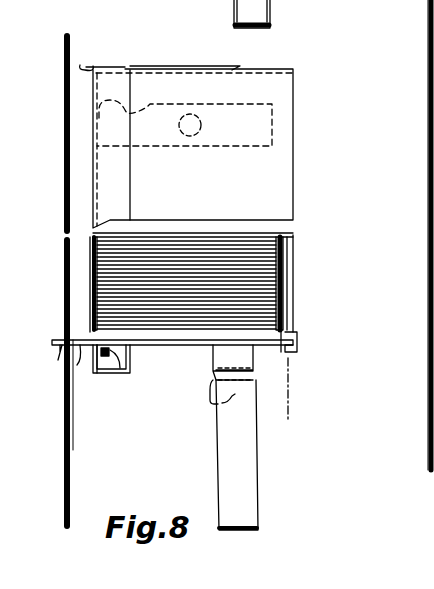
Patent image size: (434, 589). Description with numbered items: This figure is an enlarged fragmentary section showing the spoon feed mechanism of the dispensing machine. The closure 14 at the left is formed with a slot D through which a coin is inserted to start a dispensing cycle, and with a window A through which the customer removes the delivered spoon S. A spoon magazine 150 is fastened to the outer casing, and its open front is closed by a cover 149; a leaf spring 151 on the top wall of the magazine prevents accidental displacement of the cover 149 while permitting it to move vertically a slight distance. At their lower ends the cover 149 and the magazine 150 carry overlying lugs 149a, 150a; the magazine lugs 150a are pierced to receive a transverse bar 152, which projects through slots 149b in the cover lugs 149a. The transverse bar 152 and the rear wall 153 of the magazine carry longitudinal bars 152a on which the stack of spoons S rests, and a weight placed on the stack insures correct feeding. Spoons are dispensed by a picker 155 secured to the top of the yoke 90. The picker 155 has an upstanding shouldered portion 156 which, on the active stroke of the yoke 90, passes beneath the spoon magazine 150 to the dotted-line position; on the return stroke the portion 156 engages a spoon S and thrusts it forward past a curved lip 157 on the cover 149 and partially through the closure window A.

The closure 14 is at (71, 40).
The slot D is at (428, 25).
The spoon S is at (55, 340).
The window A is at (60, 350).
The yoke 90 is at (246, 464).
The cover 149 is at (118, 68).
The cover lugs 149a is at (132, 356).
The slots 149b is at (118, 375).
The spoon magazine 150 is at (294, 152).
The magazine lugs 150a is at (96, 374).
The leaf spring 151 is at (140, 66).
The transverse bar 152 is at (127, 368).
The longitudinal bars 152a is at (288, 352).
The rear wall 153 is at (284, 298).
The picker 155 is at (217, 365).
The upstanding shouldered portion 156 is at (258, 350).
The curved lip 157 is at (80, 345).